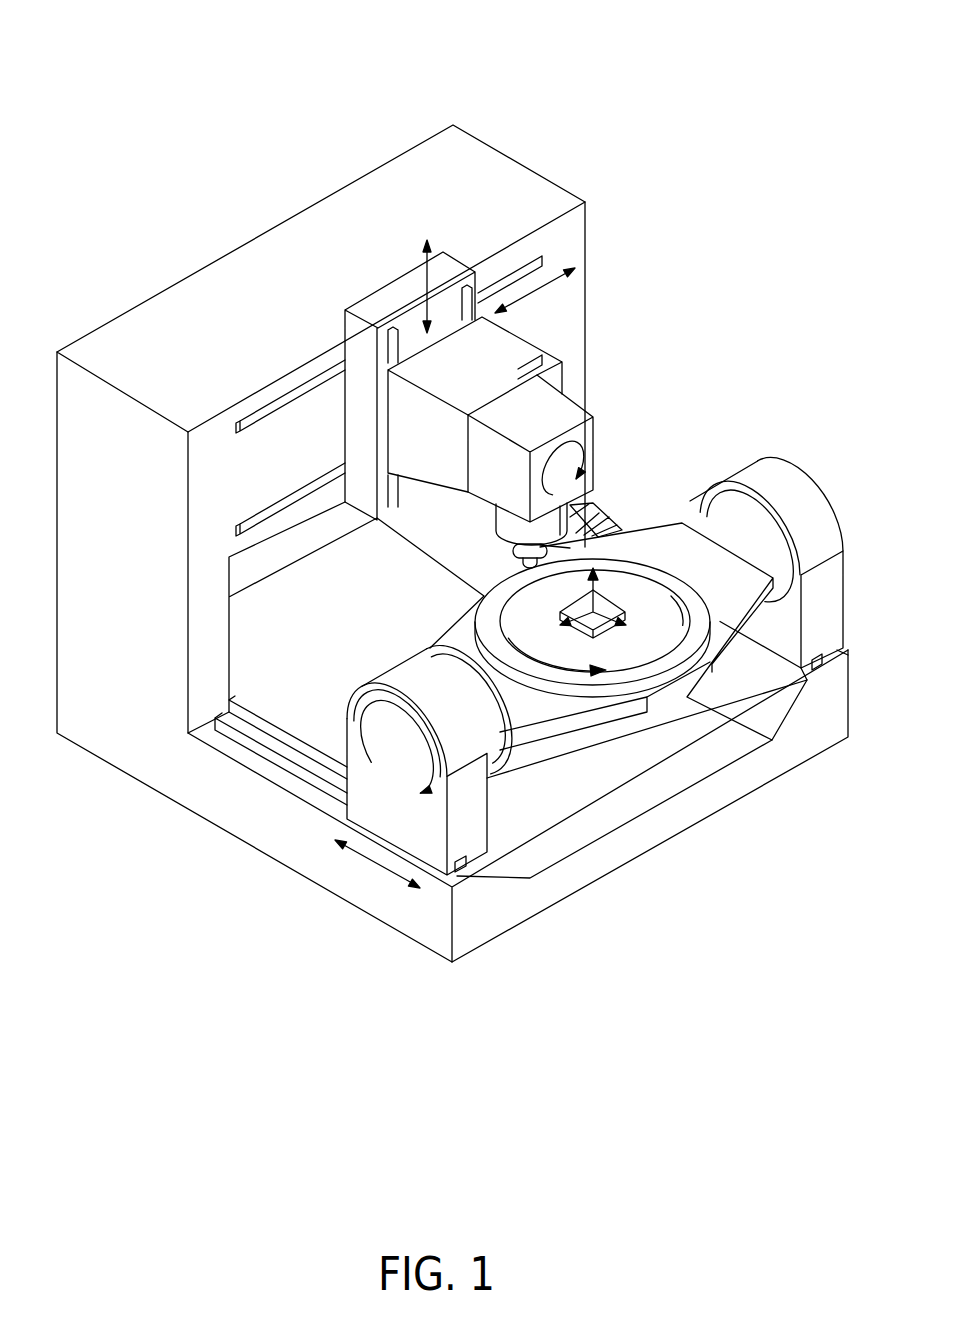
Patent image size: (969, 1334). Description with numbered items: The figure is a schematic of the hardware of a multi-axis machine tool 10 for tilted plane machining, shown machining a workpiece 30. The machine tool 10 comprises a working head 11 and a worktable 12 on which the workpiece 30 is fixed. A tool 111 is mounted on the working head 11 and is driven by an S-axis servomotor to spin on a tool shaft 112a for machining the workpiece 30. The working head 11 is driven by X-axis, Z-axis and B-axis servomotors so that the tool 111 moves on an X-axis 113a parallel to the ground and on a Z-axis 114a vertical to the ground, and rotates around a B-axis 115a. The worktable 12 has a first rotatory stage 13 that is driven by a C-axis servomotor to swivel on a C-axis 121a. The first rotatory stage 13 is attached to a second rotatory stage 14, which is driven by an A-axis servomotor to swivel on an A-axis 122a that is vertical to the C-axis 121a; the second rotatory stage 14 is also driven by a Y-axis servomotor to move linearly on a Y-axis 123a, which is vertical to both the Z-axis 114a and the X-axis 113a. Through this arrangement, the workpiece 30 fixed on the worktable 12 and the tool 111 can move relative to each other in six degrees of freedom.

The multi-axis machine tool 10 is at (466, 33).
The working head 11 is at (564, 393).
The tool 111 is at (496, 536).
The tool shaft 112a is at (512, 552).
The X-axis 113a is at (550, 282).
The Z-axis 114a is at (427, 293).
The B-axis 115a is at (592, 436).
The worktable 12 is at (784, 456).
The C-axis 121a is at (580, 565).
The A-axis 122a is at (347, 732).
The Y-axis 123a is at (362, 858).
The first rotatory stage 13 is at (483, 605).
The second rotatory stage 14 is at (440, 647).
The workpiece 30 is at (607, 608).